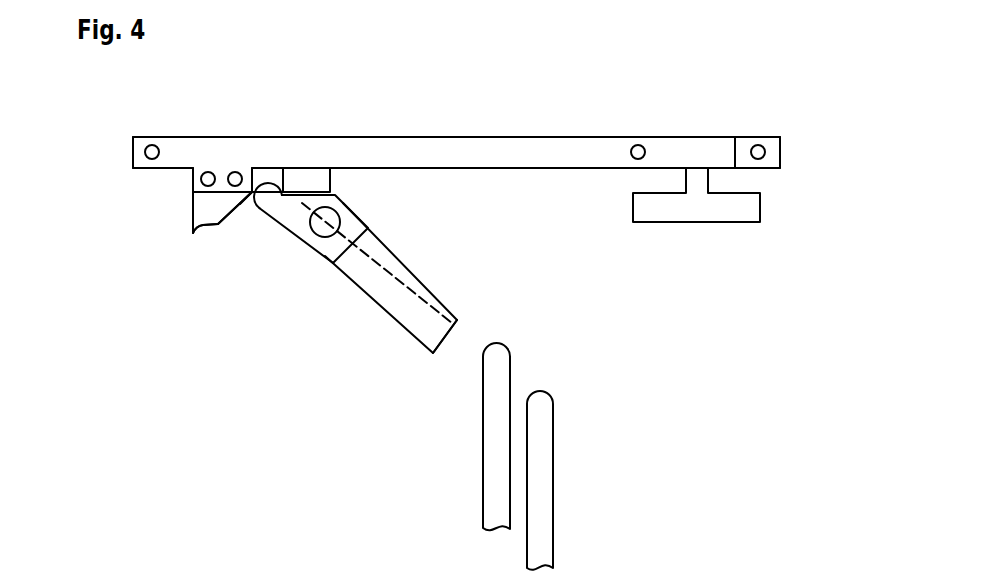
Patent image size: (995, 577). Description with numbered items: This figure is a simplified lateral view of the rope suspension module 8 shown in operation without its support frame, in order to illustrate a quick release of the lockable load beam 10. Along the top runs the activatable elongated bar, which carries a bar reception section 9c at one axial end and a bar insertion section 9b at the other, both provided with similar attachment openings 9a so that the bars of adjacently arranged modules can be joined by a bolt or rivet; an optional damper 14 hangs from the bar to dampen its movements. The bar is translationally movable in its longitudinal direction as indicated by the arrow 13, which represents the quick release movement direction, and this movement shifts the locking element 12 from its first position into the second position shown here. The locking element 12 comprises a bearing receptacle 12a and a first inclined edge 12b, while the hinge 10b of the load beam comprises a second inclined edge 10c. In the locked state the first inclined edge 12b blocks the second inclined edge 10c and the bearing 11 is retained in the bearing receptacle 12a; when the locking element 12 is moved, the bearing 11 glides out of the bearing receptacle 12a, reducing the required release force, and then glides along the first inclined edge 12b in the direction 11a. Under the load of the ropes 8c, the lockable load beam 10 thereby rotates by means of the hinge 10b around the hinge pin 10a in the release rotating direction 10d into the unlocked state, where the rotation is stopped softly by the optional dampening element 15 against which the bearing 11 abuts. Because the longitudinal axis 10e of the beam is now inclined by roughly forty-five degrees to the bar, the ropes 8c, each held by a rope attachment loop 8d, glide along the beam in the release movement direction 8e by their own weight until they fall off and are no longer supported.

The rope suspension module 8 is at (110, 115).
The ropes 8c is at (592, 545).
The rope attachment loops 8d is at (483, 380).
The release movement direction 8e is at (499, 316).
The attachment openings 9a is at (152, 146).
The bar insertion section 9b is at (772, 158).
The bar reception section 9c is at (130, 153).
The lockable load beam 10 is at (366, 302).
The hinge pin 10a is at (348, 198).
The hinge 10b is at (333, 258).
The second inclined edge 10c is at (323, 177).
The release rotating direction 10d is at (445, 187).
The longitudinal axis 10e is at (462, 337).
The bearing 11 is at (266, 188).
The gliding direction 11a is at (228, 229).
The locking element 12 is at (198, 209).
The bearing receptacle 12a is at (200, 240).
The first inclined edge 12b is at (248, 224).
The arrow 13 is at (505, 116).
The damper 14 is at (695, 216).
The dampening element 15 is at (263, 177).